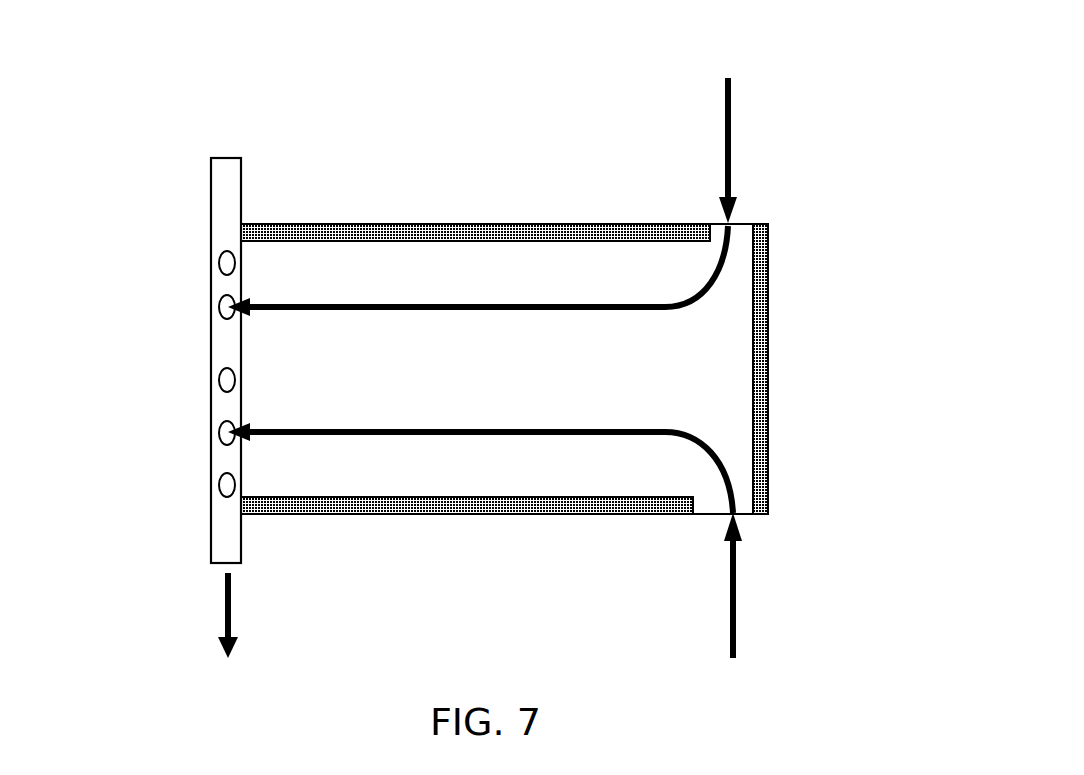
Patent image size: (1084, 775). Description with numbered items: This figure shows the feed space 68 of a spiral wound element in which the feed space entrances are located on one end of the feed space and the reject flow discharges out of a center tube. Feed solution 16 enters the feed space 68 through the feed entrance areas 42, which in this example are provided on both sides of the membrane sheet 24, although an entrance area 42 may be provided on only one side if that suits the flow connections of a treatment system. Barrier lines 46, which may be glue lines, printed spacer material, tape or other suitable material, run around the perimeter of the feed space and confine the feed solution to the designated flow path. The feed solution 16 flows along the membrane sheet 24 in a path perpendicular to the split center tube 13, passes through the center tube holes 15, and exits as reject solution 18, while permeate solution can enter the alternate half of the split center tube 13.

The split center tube 13 is at (225, 208).
The center tube holes 15 is at (225, 380).
The feed solution 16 is at (733, 133).
The reject solution 18 is at (226, 603).
The membrane sheet 24 is at (472, 360).
The feed entrance areas 42 is at (743, 243).
The barrier lines 46 is at (431, 233).
The feed space 68 is at (356, 359).